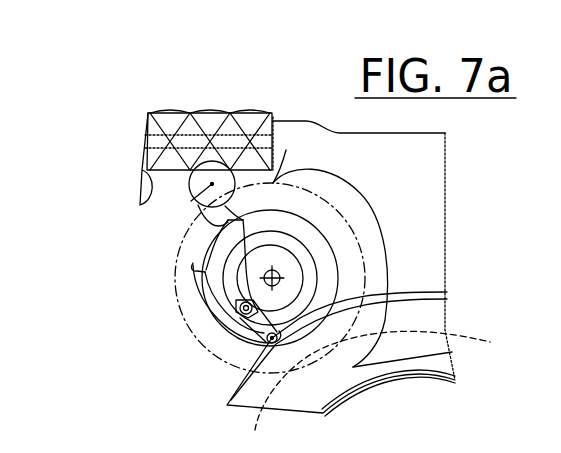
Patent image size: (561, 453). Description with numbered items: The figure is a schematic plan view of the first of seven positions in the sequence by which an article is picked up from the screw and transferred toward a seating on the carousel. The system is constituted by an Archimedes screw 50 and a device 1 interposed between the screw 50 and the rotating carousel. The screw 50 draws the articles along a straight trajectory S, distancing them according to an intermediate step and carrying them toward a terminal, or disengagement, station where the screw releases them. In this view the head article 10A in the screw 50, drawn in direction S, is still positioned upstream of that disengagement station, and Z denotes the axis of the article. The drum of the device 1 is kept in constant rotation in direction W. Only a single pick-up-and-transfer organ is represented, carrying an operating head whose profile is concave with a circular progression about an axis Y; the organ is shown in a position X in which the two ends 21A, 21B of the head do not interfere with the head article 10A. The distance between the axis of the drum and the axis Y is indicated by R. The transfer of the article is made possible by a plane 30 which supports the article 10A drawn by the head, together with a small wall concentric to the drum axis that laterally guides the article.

The device 1 is at (173, 317).
The head article 10A is at (196, 200).
The end of the head 21A is at (286, 152).
The end of the head 21B is at (193, 266).
The plane 30 is at (373, 250).
The Archimedes screw 50 is at (130, 122).
The distance between axes R is at (268, 276).
The straight trajectory S is at (128, 183).
The direction of rotation W is at (344, 206).
The position of the organ X is at (207, 328).
The axis Y is at (209, 236).
The axis of the article Z is at (195, 185).